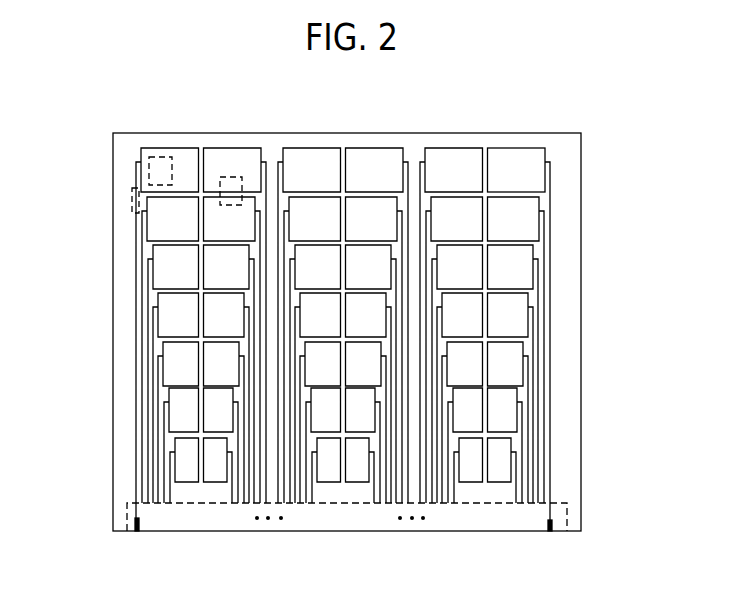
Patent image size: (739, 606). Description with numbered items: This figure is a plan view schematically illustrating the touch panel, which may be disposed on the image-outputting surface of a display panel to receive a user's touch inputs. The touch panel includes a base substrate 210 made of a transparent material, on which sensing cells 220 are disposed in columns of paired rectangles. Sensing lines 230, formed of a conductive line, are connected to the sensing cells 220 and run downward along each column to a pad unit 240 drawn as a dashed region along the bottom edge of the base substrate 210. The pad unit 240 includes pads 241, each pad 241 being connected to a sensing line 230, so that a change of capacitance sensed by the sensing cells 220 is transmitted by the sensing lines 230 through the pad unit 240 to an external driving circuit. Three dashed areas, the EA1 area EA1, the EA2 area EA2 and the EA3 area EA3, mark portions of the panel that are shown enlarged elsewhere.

The base substrate 210 is at (582, 352).
The sensing cells 220 is at (516, 158).
The sensing lines 230 is at (551, 195).
The pad unit 240 is at (568, 513).
The pads 241 is at (547, 532).
The EA1 area EA1 is at (158, 157).
The EA2 area EA2 is at (131, 201).
The EA3 area EA3 is at (229, 176).